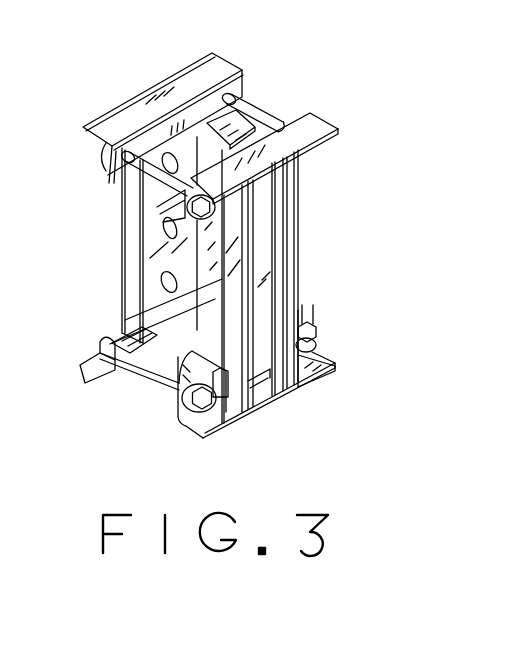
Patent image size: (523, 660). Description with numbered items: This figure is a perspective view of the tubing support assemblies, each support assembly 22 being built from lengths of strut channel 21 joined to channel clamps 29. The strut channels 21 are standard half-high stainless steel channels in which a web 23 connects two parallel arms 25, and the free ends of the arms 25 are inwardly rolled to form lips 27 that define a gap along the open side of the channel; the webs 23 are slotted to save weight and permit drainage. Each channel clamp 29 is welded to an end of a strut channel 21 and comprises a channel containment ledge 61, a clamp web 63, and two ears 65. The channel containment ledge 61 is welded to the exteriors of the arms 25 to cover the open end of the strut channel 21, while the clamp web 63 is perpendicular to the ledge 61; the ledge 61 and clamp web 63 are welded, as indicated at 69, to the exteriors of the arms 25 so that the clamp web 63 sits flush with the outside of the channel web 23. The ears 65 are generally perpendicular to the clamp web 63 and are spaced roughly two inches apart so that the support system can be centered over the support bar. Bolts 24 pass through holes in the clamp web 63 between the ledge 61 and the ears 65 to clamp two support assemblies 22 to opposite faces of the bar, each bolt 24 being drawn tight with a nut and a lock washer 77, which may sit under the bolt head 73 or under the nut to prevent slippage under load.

The strut channel 21 is at (120, 240).
The support assembly 22 is at (274, 90).
The web 23 is at (160, 262).
The bolt 24 is at (138, 382).
The arm 25 is at (122, 263).
The lip 27 is at (288, 182).
The channel clamp 29 is at (126, 79).
The channel containment ledge 61 is at (265, 392).
The clamp web 63 is at (177, 420).
The ear 65 is at (178, 364).
The weld 69 is at (242, 388).
The bolt head 73 is at (318, 340).
The lock washer 77 is at (310, 313).